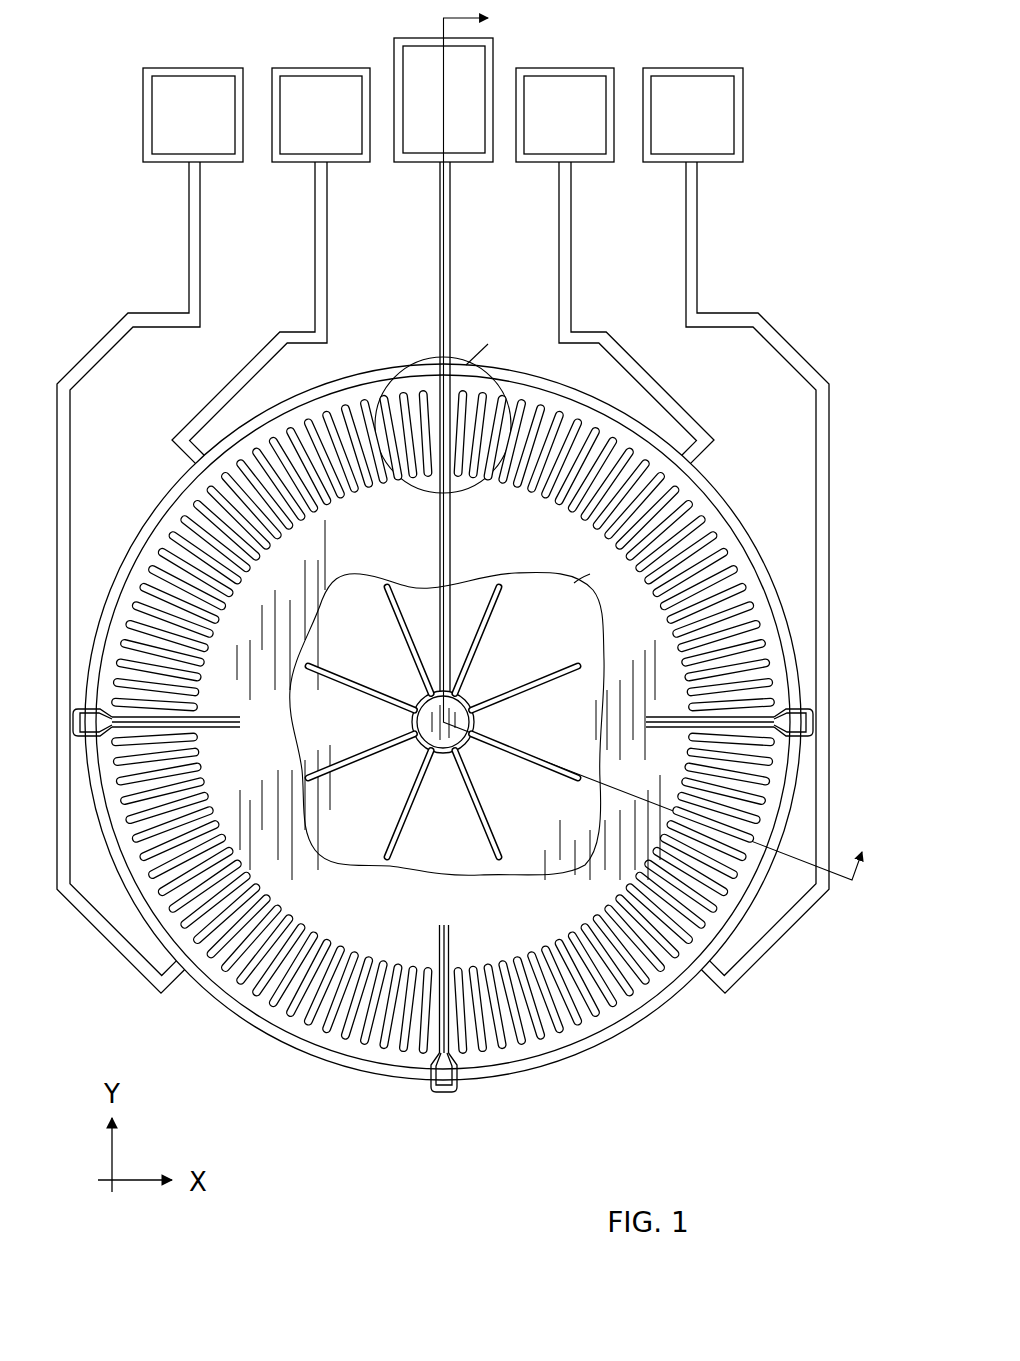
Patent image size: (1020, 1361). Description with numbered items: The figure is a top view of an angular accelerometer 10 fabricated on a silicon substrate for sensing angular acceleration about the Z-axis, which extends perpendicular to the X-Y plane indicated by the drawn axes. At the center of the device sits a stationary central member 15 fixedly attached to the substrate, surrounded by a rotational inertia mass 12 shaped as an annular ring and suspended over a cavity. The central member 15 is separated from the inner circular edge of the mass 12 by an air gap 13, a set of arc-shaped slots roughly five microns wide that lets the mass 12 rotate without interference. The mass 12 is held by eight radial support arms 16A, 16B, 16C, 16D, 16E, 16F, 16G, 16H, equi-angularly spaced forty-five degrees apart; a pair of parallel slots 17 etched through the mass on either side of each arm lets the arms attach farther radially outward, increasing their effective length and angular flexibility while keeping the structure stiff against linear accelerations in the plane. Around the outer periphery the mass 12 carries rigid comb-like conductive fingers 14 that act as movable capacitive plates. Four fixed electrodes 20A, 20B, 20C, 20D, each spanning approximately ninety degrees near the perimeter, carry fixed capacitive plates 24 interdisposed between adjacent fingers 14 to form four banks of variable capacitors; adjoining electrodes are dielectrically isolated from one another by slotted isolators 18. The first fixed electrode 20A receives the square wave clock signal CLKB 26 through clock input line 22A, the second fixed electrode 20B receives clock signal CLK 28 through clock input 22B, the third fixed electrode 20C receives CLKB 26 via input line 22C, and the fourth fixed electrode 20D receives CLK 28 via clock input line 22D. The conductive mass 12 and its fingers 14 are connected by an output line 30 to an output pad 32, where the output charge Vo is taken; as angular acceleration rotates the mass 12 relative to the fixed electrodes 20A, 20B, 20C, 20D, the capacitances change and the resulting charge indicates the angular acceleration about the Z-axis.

The angular accelerometer 10 is at (784, 90).
The rotational inertia mass 12 is at (476, 557).
The air gap 13 is at (433, 734).
The comb-like conductive fingers 14 is at (372, 962).
The central member 15 is at (466, 700).
The radial support arm 16A is at (387, 590).
The radial support arm 16B is at (492, 592).
The radial support arm 16C is at (577, 672).
The radial support arm 16D is at (575, 780).
The radial support arm 16E is at (497, 857).
The radial support arm 16F is at (386, 856).
The radial support arm 16G is at (310, 777).
The radial support arm 16H is at (312, 665).
The parallel slots 17 is at (449, 722).
The isolators 18 is at (85, 726).
The first fixed electrode 20A is at (149, 540).
The second fixed electrode 20B is at (705, 488).
The third fixed electrode 20C is at (665, 990).
The fourth fixed electrode 20D is at (264, 926).
The clock input line 22A is at (227, 390).
The clock input 22B is at (655, 392).
The input line 22C is at (760, 956).
The clock input line 22D is at (100, 929).
The fixed capacitive plates 24 is at (344, 944).
The clock signal CLKB 26 is at (320, 67).
The clock signal CLK 28 is at (185, 67).
The output line 30 is at (452, 216).
The output pad 32 is at (410, 37).